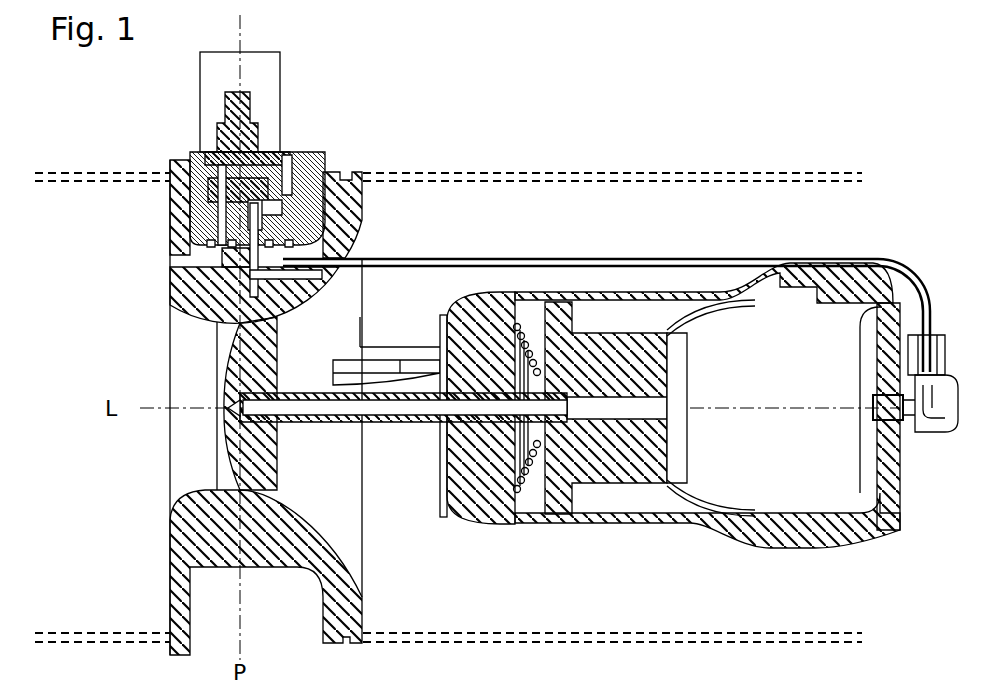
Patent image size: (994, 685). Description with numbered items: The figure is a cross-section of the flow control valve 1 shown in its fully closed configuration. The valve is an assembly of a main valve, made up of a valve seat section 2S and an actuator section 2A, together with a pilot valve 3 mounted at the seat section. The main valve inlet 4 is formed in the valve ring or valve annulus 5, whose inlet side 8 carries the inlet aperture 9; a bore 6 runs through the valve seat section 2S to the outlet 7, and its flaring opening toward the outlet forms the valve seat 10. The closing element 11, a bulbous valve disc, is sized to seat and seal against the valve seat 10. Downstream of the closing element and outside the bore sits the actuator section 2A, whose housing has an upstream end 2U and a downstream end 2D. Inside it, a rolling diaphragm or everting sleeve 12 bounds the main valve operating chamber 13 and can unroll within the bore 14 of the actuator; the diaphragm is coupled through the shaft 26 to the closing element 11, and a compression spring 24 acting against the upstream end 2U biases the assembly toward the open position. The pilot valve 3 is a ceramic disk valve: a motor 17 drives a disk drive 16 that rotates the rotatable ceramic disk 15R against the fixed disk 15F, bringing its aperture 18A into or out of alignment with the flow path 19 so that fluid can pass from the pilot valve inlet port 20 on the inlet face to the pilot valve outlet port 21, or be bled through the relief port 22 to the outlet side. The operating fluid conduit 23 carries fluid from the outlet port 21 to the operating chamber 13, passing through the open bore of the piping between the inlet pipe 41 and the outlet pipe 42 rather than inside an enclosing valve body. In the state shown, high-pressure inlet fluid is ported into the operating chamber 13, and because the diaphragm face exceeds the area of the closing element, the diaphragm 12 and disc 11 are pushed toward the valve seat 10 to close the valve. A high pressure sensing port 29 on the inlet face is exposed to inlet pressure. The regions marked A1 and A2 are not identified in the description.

The flow control valve 1 is at (498, 136).
The actuator section 2A is at (640, 530).
The upstream end of the actuator housing 2U is at (521, 503).
The downstream end of the actuator section 2D is at (873, 485).
The valve seat section 2S is at (378, 580).
The pilot valve 3 is at (338, 135).
The main valve inlet 4 is at (150, 342).
The valve ring or valve annulus 5 is at (363, 213).
The bore 6 is at (200, 448).
The outlet 7 is at (395, 477).
The inlet side of the valve 8 is at (168, 553).
The inlet aperture 9 is at (213, 377).
The valve seat 10 is at (328, 512).
The closing element 11 is at (237, 452).
The rolling diaphragm or everting sleeve 12 is at (688, 505).
The main valve operating chamber 13 is at (823, 332).
The bore of the actuator 14 is at (665, 508).
The fixed disk 15F is at (205, 205).
The rotatable ceramic disk 15R is at (268, 160).
The disk drive 16 is at (258, 126).
The motor 17 is at (283, 75).
The aperture of the rotatable disc 18A is at (207, 180).
The flow path of the pilot valve 19 is at (205, 165).
The pilot valve inlet port 20 is at (162, 255).
The pilot valve outlet port 21 is at (300, 222).
The relief port 22 is at (323, 278).
The operating fluid conduit 23 is at (580, 300).
The spring 24 is at (540, 333).
The shaft 26 is at (438, 423).
The high pressure sensing port 29 is at (630, 330).
The inlet pipe 41 is at (45, 184).
The outlet pipe 42 is at (762, 172).
The first chamber A1 is at (283, 353).
The second chamber A2 is at (690, 370).